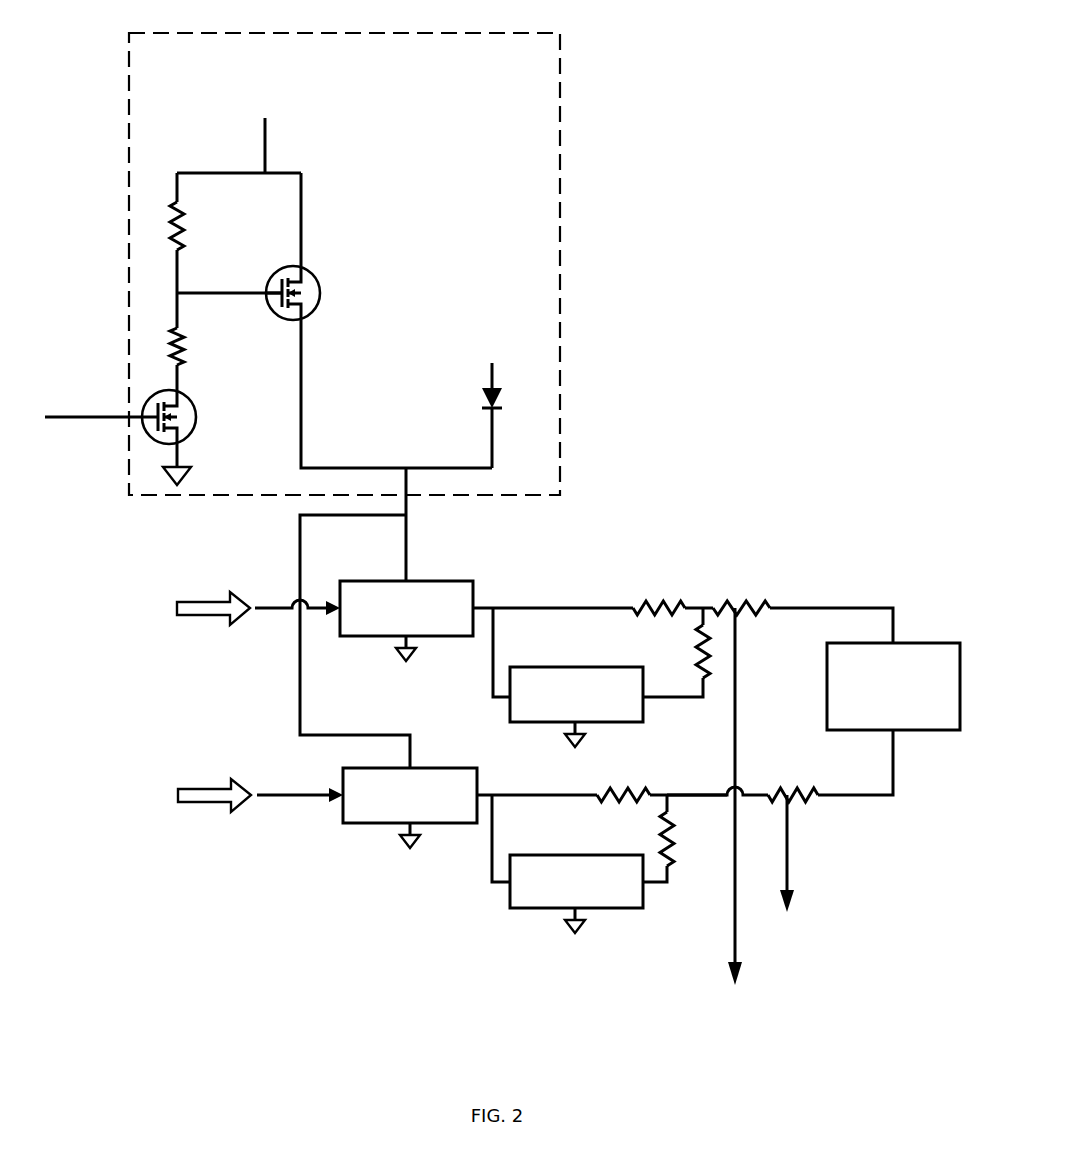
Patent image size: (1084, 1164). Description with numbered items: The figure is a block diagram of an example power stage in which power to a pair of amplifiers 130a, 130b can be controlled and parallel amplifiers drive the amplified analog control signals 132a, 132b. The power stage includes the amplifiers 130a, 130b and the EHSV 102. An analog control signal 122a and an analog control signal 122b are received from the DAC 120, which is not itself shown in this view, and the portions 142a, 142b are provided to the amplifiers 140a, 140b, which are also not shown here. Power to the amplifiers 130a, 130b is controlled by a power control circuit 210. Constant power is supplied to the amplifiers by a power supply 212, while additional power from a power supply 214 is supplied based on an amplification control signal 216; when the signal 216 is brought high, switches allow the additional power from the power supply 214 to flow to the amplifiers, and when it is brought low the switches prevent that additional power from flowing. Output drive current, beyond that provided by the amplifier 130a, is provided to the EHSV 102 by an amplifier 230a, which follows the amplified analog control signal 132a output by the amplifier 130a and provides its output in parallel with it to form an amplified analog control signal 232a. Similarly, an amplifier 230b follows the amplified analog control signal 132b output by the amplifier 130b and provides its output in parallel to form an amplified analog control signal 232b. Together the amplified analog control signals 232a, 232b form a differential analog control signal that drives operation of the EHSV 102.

The power control circuit 210 is at (504, 63).
The power supply 214 is at (243, 92).
The power supply 212 is at (466, 338).
The amplification control signal 216 is at (102, 417).
The DAC 120 is at (149, 702).
The analog control signal 122a is at (300, 606).
The analog control signal 122b is at (275, 798).
The amplifier 130a is at (357, 637).
The amplifier 130b is at (362, 824).
The amplified analog control signal 132a is at (548, 608).
The amplified analog control signal 132b is at (546, 795).
The amplified analog control signal 232a is at (713, 608).
The amplified analog control signal 232b is at (712, 795).
The amplifier 230a is at (558, 667).
The amplifier 230b is at (558, 855).
The portion 142a is at (736, 767).
The portion 142b is at (788, 865).
The amplifier 140a is at (741, 1024).
The amplifier 140b is at (797, 948).
The EHSV 102 is at (877, 713).